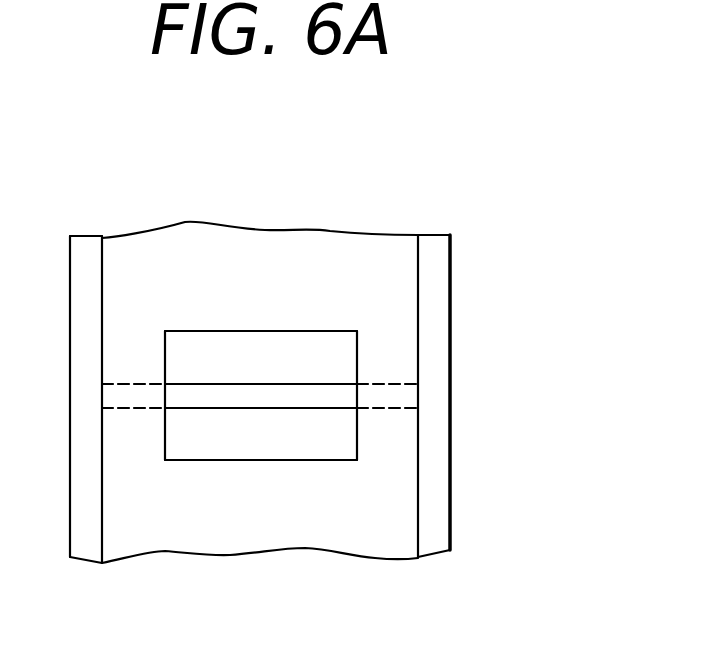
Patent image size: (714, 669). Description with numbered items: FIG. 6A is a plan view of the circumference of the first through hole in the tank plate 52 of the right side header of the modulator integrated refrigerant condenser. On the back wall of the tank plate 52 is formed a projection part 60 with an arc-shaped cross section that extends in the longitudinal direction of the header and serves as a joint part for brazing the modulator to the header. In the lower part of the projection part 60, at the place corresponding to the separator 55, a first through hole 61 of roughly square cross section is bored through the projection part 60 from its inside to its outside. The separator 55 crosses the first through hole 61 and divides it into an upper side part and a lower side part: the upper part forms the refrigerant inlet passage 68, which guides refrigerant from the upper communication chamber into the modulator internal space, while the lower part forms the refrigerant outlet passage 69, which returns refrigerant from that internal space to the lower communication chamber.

The tank plate 52 is at (453, 272).
The separator 55 is at (241, 395).
The projection part 60 is at (313, 270).
The first through hole 61 is at (568, 328).
The refrigerant inlet passage 68 is at (343, 356).
The refrigerant outlet passage 69 is at (335, 433).